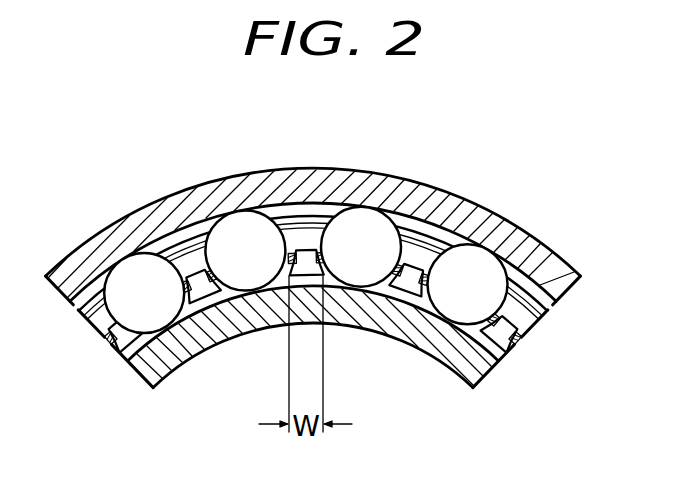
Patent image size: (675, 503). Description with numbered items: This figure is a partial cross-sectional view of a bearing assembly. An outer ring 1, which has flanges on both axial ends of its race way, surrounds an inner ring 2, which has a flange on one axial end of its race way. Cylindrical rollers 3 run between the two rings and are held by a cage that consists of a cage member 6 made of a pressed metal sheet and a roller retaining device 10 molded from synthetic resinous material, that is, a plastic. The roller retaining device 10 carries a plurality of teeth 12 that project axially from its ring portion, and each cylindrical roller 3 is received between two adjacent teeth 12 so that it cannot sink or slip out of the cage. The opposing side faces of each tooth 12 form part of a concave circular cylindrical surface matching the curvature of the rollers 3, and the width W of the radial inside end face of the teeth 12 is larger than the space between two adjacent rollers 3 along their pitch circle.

The outer ring 1 is at (473, 212).
The inner ring 2 is at (200, 343).
The cylindrical roller 3 is at (245, 222).
The cage member 6 is at (520, 323).
The roller retaining device 10 is at (517, 342).
The teeth 12 is at (405, 286).